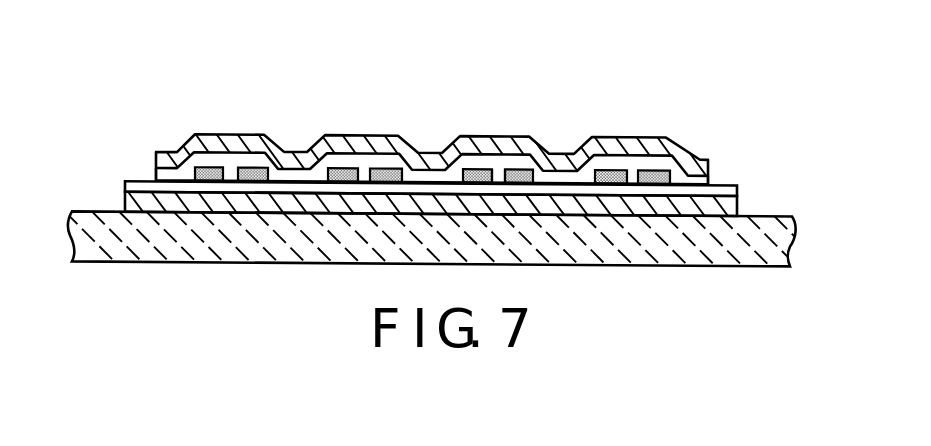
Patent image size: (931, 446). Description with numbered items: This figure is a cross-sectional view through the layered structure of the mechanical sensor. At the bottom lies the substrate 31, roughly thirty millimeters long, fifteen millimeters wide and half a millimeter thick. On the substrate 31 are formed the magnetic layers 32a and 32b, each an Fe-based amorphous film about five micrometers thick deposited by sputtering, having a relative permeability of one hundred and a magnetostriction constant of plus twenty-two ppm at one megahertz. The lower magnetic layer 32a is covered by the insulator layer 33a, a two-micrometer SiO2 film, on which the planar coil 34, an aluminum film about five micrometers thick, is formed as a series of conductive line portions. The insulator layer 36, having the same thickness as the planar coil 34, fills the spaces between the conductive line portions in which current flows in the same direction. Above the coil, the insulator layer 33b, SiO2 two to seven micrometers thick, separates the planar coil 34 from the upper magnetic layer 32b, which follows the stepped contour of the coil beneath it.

The substrate 31 is at (708, 253).
The magnetic layer 32a is at (132, 198).
The magnetic layer 32b is at (178, 152).
The insulator layer 33a is at (733, 188).
The insulator layer 33b is at (707, 177).
The planar coil 34 is at (667, 169).
The insulator layer 36 is at (500, 170).